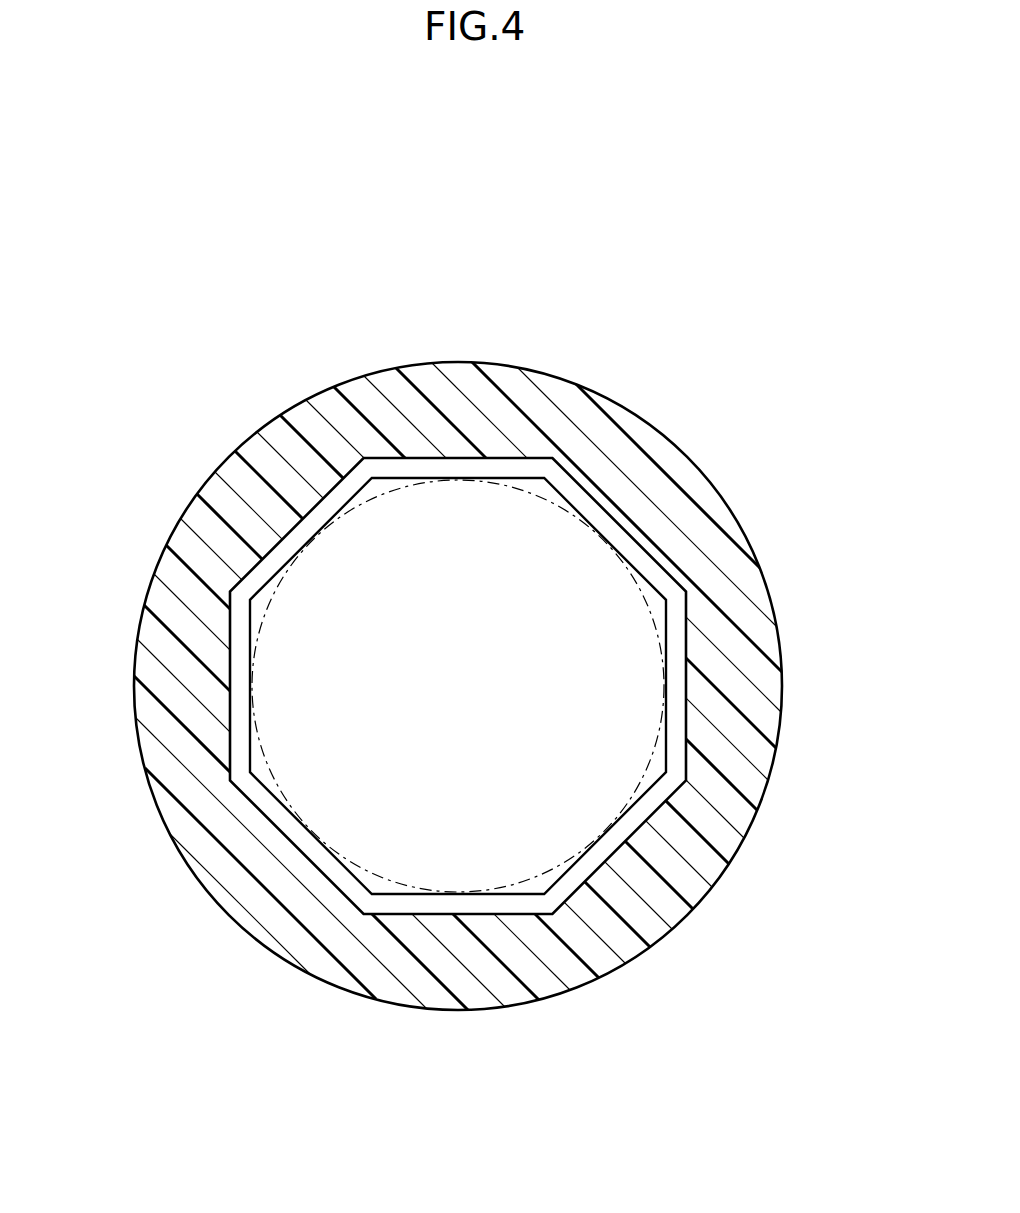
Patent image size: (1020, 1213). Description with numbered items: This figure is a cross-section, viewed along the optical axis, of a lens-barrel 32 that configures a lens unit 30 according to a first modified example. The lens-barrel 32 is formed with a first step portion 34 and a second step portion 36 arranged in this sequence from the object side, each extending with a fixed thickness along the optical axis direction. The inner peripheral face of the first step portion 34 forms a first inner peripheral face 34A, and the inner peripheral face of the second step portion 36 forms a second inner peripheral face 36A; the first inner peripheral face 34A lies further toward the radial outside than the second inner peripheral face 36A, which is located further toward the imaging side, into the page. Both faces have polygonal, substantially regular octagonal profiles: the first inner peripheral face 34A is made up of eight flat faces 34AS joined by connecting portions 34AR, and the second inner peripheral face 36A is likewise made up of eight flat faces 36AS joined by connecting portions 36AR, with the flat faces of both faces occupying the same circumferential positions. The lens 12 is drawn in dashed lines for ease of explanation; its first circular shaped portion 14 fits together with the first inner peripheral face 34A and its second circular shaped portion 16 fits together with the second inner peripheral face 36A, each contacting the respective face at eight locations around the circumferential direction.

The lens 12 is at (500, 293).
The first circular shaped portion 14 is at (382, 470).
The second circular shaped portion 16 is at (458, 479).
The lens unit 30 is at (674, 350).
The lens-barrel 32 is at (678, 415).
The first step portion 34 is at (694, 467).
The second step portion 36 is at (458, 686).
The first inner peripheral face 34A is at (509, 720).
The second inner peripheral face 36A is at (487, 740).
The flat faces 34AS is at (296, 536).
The flat faces 36AS is at (298, 520).
The connecting portions 34AR is at (258, 594).
The connecting portions 36AR is at (254, 628).